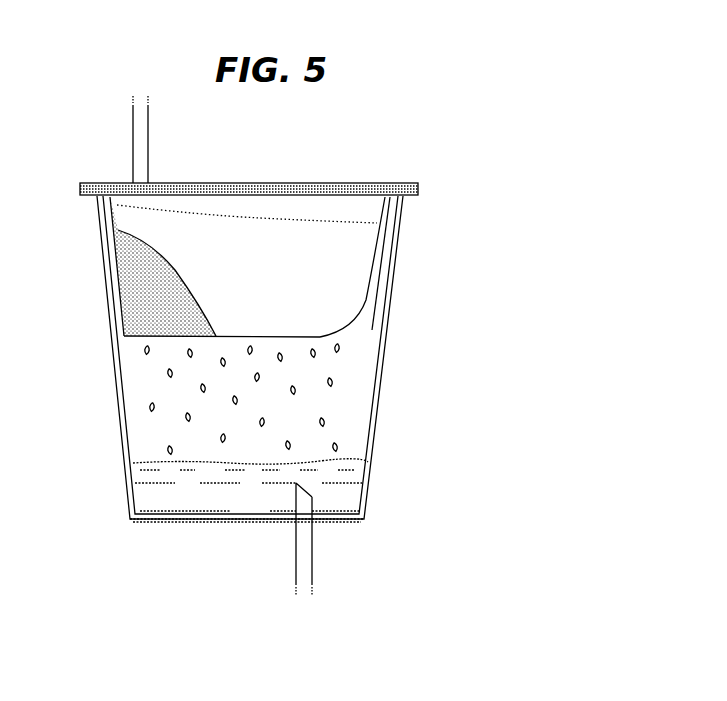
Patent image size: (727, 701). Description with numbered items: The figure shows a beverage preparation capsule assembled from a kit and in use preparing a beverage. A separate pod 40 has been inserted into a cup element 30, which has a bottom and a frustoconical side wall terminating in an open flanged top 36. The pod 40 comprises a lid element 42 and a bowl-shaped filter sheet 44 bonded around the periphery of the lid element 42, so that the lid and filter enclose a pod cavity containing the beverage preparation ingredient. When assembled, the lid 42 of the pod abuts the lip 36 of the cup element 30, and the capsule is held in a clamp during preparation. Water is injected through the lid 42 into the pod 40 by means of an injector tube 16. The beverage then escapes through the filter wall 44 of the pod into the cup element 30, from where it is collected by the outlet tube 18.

The injector tube 16 is at (133, 131).
The outlet tube 18 is at (313, 558).
The cup element 30 is at (387, 346).
The open flanged top 36 is at (403, 202).
The pod 40 is at (390, 293).
The lid element 42 is at (350, 184).
The filter sheet 44 is at (320, 340).